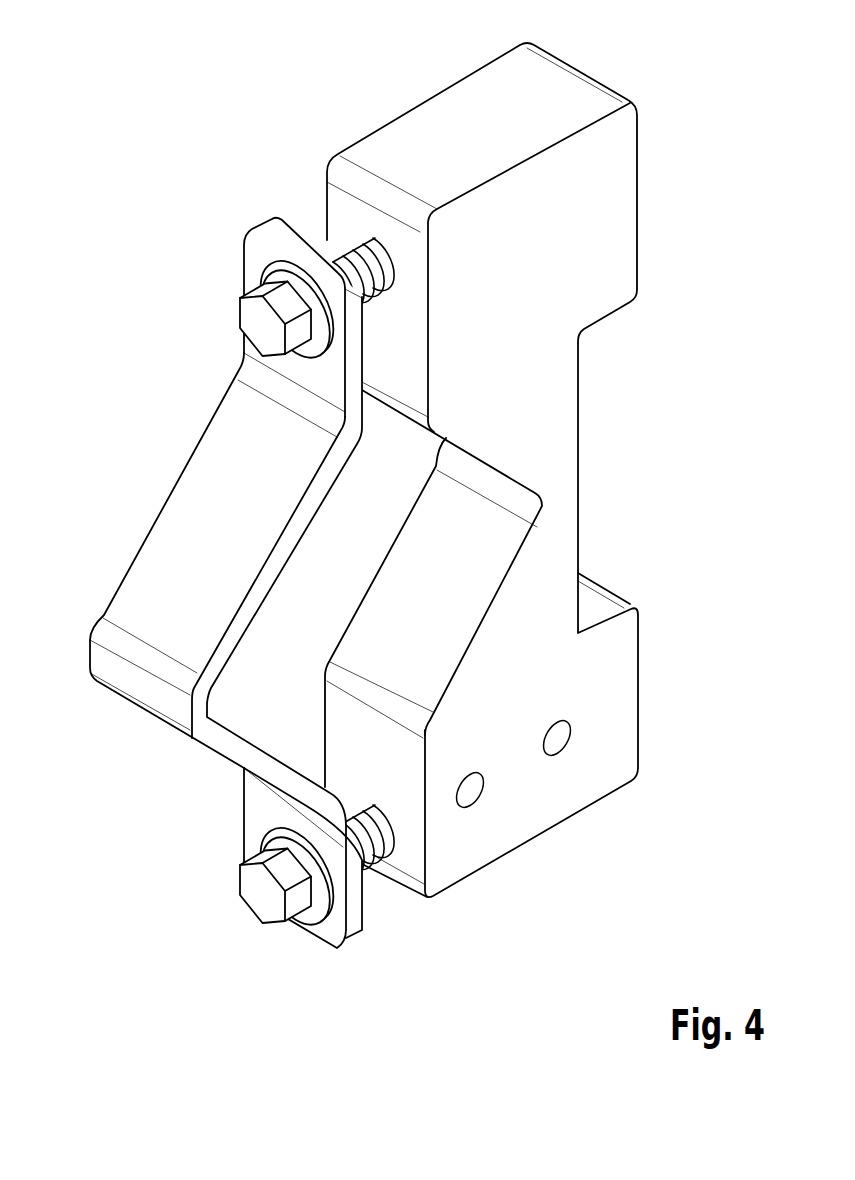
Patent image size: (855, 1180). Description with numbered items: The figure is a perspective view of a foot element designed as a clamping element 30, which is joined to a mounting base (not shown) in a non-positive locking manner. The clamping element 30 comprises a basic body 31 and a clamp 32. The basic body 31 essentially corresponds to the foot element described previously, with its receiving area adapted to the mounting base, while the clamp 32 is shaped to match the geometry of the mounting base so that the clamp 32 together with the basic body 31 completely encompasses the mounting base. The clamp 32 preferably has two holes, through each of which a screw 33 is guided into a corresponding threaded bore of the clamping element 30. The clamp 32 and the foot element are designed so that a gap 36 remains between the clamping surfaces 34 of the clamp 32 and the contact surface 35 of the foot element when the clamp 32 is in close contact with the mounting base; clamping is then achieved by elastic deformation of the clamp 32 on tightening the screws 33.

The clamping element 30 is at (415, 503).
The basic body 31 is at (451, 480).
The clamp 32 is at (228, 576).
The screw 33 is at (252, 320).
The clamping surface 34 is at (300, 228).
The contact surface 35 is at (337, 203).
The gap 36 is at (312, 215).